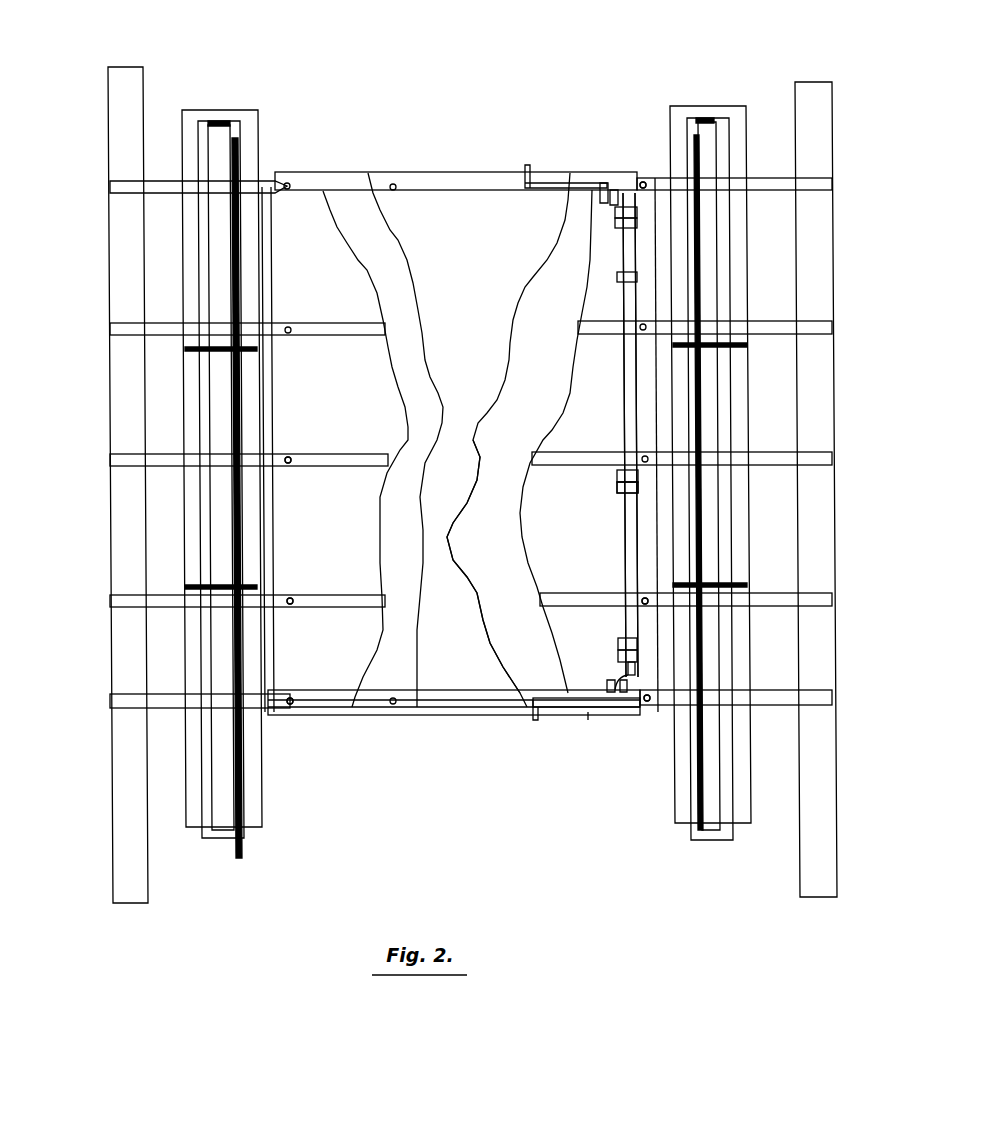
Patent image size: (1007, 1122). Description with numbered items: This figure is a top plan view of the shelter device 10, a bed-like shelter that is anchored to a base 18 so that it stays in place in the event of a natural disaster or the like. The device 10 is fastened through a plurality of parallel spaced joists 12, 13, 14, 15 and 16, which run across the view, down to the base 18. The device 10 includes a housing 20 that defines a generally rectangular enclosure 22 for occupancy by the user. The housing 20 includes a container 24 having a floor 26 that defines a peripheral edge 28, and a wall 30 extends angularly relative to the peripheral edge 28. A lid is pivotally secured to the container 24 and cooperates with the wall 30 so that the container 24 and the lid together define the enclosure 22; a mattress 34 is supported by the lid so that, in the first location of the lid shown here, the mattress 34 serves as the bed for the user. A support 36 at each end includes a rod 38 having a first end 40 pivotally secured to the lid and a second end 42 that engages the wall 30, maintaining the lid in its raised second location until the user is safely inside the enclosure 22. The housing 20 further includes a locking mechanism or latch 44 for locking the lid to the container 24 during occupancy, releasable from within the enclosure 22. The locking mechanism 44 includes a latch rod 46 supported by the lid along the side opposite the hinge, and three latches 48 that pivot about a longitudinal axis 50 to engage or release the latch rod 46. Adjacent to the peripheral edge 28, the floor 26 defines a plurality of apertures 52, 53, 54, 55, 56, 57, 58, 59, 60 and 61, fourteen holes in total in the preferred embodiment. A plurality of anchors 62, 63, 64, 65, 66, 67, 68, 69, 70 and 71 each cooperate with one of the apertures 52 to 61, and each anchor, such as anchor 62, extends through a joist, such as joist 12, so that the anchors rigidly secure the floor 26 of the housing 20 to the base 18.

The device 10 is at (427, 128).
The joist 12 is at (125, 697).
The joist 13 is at (357, 600).
The joist 14 is at (387, 463).
The joist 15 is at (370, 333).
The joist 16 is at (768, 185).
The base 18 is at (328, 861).
The housing 20 is at (382, 719).
The enclosure 22 is at (535, 547).
The container 24 is at (517, 638).
The floor 26 is at (380, 275).
The peripheral edge 28 is at (388, 177).
The wall 30 is at (443, 178).
The mattress 34 is at (462, 291).
The support 36 is at (588, 718).
The rod 38 is at (567, 717).
The first end 40 is at (633, 685).
The second end 42 is at (533, 720).
The locking mechanism 44 is at (643, 247).
The latch rod 46 is at (630, 622).
The latch 48 is at (615, 213).
The longitudinal axis 50 is at (633, 705).
The aperture 52 is at (287, 707).
The aperture 53 is at (290, 605).
The aperture 54 is at (288, 462).
The aperture 55 is at (257, 349).
The aperture 56 is at (287, 186).
The aperture 57 is at (652, 700).
The aperture 58 is at (645, 600).
The aperture 59 is at (660, 460).
The aperture 60 is at (645, 325).
The aperture 61 is at (644, 182).
The anchor 62 is at (290, 703).
The anchor 63 is at (290, 603).
The anchor 64 is at (288, 460).
The anchor 65 is at (288, 330).
The anchor 66 is at (287, 186).
The anchor 67 is at (648, 703).
The anchor 68 is at (647, 604).
The anchor 69 is at (640, 490).
The anchor 70 is at (745, 347).
The anchor 71 is at (640, 183).